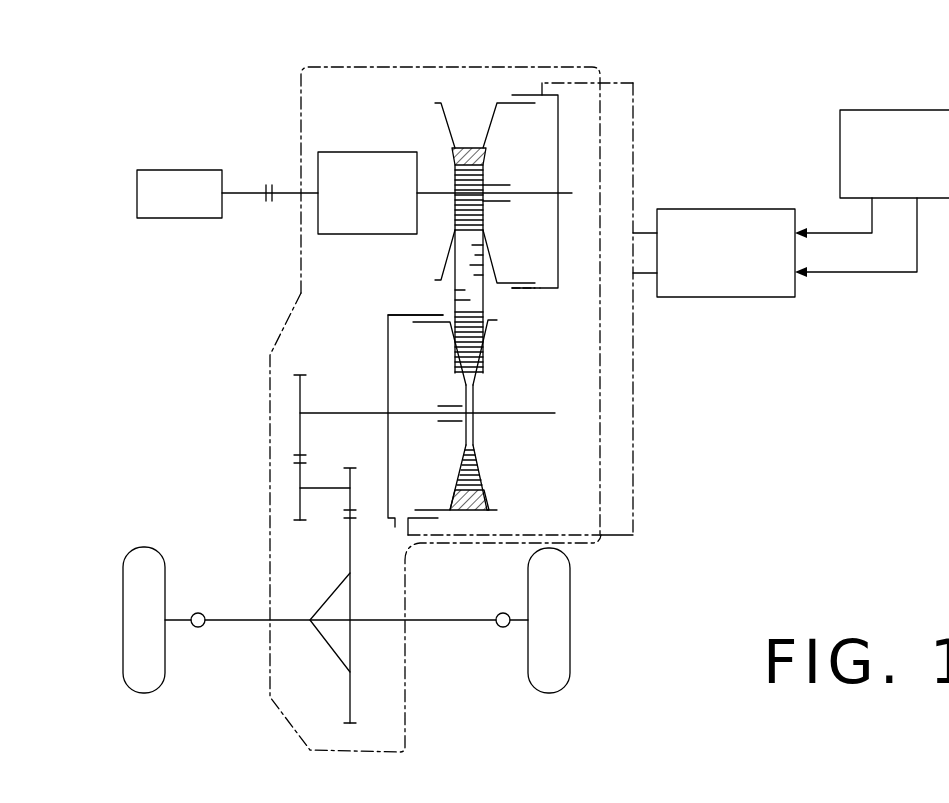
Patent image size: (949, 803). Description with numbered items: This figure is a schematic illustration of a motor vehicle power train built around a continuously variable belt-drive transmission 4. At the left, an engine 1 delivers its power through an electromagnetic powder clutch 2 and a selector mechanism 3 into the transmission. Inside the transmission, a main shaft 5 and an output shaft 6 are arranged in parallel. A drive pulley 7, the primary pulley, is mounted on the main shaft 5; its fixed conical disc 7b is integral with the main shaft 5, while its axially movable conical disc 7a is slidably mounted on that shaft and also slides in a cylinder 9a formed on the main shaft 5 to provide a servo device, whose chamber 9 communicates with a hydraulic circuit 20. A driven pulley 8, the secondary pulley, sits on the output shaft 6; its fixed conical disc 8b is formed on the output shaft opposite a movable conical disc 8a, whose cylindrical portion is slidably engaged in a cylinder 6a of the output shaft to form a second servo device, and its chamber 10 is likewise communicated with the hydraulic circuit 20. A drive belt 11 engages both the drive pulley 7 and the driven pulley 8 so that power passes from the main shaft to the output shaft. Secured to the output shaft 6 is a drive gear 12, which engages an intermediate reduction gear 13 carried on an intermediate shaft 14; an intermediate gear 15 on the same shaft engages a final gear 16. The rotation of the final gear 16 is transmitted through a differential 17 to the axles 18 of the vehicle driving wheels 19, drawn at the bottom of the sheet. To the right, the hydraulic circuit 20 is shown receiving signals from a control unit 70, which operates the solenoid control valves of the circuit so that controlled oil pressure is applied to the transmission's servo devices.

The engine 1 is at (186, 170).
The electromagnetic powder clutch 2 is at (270, 184).
The selector mechanism 3 is at (370, 152).
The continuously variable belt-drive transmission 4 is at (478, 100).
The main shaft 5 is at (428, 196).
The output shaft 6 is at (346, 413).
The cylinder of the output shaft 6a is at (412, 313).
The drive pulley 7 is at (472, 148).
The movable conical disc 7a is at (500, 104).
The fixed conical disc 7b is at (450, 124).
The driven pulley 8 is at (480, 426).
The movable conical disc 8a is at (452, 326).
The fixed conical disc 8b is at (481, 357).
The chamber 9 is at (545, 150).
The cylinder 9a is at (545, 297).
The chamber 10 is at (388, 352).
The drive belt 11 is at (470, 500).
The drive gear 12 is at (303, 372).
The intermediate reduction gear 13 is at (303, 525).
The intermediate shaft 14 is at (325, 488).
The intermediate gear 15 is at (350, 468).
The final gear 16 is at (352, 726).
The differential 17 is at (335, 602).
The axles 18 is at (185, 625).
The vehicle driving wheels 19 is at (160, 576).
The hydraulic circuit 20 is at (718, 297).
The control unit 70 is at (880, 110).